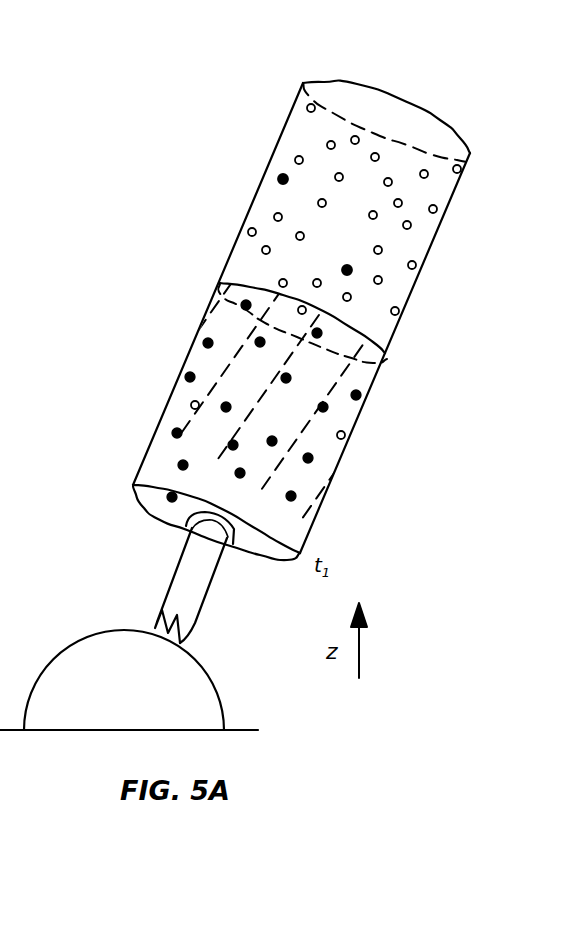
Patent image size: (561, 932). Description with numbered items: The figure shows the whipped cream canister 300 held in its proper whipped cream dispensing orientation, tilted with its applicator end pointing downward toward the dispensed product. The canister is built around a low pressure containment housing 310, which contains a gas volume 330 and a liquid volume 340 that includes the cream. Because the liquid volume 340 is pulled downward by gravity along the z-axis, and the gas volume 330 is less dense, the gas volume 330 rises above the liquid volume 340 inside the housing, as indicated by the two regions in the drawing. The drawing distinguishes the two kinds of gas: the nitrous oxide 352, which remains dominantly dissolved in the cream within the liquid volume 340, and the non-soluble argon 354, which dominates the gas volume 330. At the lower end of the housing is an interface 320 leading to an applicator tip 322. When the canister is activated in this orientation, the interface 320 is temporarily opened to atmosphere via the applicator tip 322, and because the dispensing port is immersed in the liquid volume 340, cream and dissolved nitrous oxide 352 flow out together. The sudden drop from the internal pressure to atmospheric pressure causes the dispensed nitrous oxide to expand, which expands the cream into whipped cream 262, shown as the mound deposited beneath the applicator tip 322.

The whipped cream canister 300 is at (234, 89).
The low pressure containment housing 310 is at (238, 243).
The gas volume 330 is at (354, 209).
The liquid volume 340 is at (353, 258).
The nitrous oxide 352 is at (360, 392).
The argon 354 is at (344, 432).
The interface 320 is at (186, 530).
The applicator tip 322 is at (163, 600).
The whipped cream 262 is at (210, 672).